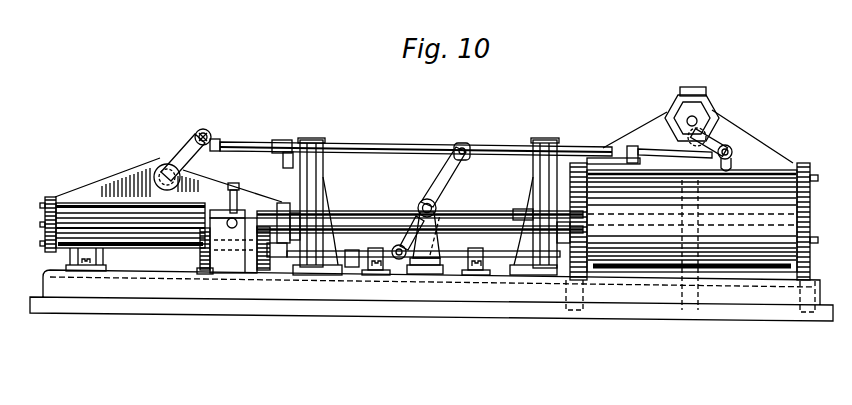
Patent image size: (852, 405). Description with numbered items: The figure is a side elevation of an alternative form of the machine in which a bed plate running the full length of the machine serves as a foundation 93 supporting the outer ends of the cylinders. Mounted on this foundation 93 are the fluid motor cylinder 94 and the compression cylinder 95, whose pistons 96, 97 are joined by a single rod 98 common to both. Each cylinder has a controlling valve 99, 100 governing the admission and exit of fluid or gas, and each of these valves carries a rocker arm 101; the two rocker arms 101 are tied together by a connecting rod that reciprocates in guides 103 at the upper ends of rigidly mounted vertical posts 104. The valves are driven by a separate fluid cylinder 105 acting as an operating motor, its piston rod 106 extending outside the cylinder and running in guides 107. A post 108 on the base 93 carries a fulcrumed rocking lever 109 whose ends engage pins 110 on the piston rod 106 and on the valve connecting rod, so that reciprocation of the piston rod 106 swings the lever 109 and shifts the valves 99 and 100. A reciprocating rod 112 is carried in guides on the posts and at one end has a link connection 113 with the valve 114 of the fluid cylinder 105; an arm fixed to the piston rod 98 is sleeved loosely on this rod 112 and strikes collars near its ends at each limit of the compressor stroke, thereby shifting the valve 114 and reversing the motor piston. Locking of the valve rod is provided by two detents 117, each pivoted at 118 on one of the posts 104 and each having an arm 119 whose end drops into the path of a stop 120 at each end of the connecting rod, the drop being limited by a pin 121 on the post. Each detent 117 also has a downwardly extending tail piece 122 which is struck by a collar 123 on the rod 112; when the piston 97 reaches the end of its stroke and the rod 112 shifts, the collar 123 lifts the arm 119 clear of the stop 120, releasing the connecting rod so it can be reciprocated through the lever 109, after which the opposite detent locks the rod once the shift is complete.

The foundation 93 is at (493, 301).
The fluid motor cylinder 94 is at (80, 217).
The compression cylinder 95 is at (790, 217).
The piston 96 is at (167, 224).
The piston 97 is at (693, 217).
The rod 98 is at (360, 226).
The controlling valve 99 is at (160, 166).
The controlling valve 100 is at (712, 109).
The rocker arm 101 is at (730, 145).
The guide 103 is at (558, 141).
The vertical post 104 is at (536, 177).
The fluid cylinder 105 is at (230, 256).
The piston rod 106 is at (352, 259).
The guide 107 is at (480, 276).
The post 108 is at (423, 226).
The rocking lever 109 is at (437, 188).
The pin 110 is at (396, 250).
The reciprocating rod 112 is at (333, 214).
The link connection 113 is at (240, 212).
The valve 114 is at (200, 274).
The detent 117 is at (570, 150).
The pivot 118 is at (535, 146).
The arm 119 is at (612, 175).
The stop 120 is at (634, 164).
The pin 121 is at (552, 196).
The tail piece 122 is at (528, 196).
The collar 123 is at (486, 252).